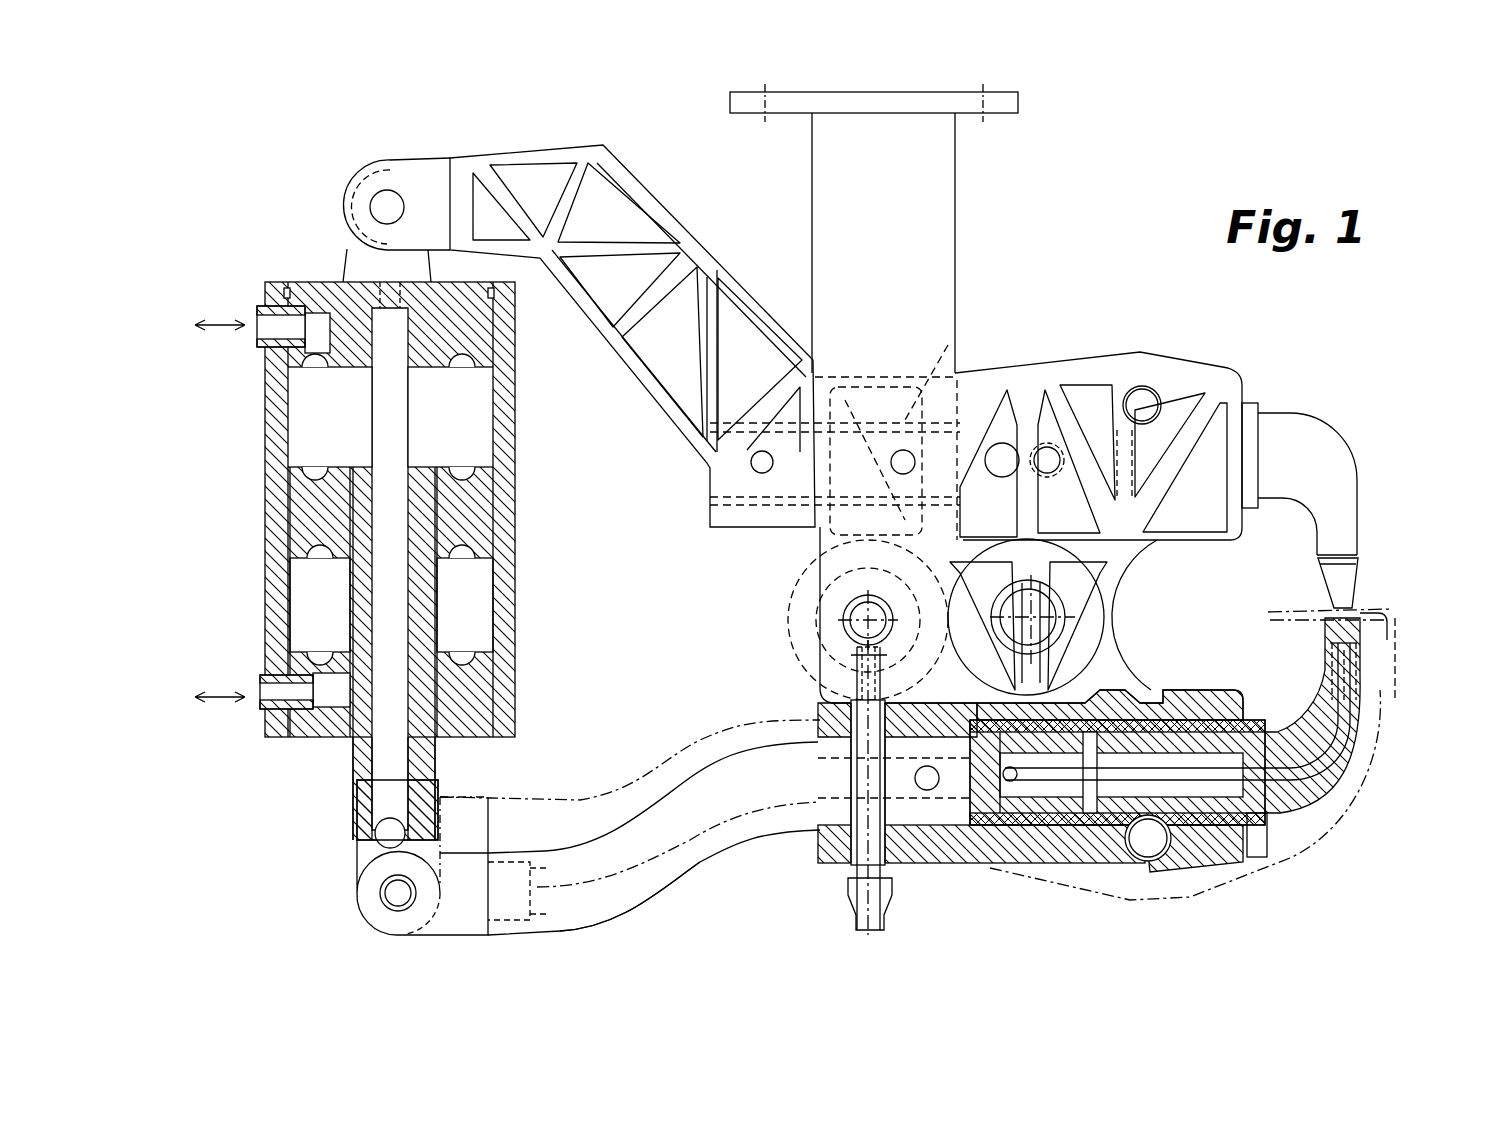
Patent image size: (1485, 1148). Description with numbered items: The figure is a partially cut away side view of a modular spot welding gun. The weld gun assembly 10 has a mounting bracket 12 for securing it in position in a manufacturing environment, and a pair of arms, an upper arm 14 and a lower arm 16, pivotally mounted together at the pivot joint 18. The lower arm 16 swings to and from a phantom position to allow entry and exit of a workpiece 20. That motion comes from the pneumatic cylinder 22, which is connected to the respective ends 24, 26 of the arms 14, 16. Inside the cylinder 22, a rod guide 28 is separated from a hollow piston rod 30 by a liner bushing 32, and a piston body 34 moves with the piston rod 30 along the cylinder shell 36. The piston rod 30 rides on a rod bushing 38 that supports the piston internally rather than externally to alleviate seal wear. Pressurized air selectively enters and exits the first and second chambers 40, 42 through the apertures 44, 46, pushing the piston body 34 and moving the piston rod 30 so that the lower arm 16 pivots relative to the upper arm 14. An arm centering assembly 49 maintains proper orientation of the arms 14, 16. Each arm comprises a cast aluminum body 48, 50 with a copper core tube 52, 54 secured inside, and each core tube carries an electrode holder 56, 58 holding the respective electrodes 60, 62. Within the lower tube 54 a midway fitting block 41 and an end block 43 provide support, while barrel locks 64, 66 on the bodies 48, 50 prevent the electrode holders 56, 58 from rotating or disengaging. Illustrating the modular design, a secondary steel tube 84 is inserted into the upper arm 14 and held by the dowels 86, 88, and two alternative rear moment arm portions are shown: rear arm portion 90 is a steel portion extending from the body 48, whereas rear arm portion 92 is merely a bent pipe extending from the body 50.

The weld gun assembly 10 is at (1168, 164).
The mounting bracket 12 is at (938, 215).
The upper arm 14 is at (730, 528).
The lower arm 16 is at (740, 740).
The pivot joint 18 is at (1060, 605).
The workpiece 20 is at (1375, 615).
The pneumatic cylinder 22 is at (388, 608).
The end of upper arm 24 is at (412, 158).
The end of lower arm 26 is at (470, 940).
The rod guide 28 is at (420, 432).
The hollow piston rod 30 is at (435, 750).
The liner bushing 32 is at (440, 770).
The piston body 34 is at (487, 497).
The cylinder shell 36 is at (518, 572).
The rod bushing 38 is at (355, 735).
The first chamber 40 is at (300, 432).
The midway fitting block 41 is at (1090, 840).
The second chamber 42 is at (300, 600).
The end block 43 is at (1010, 817).
The aperture 44 is at (262, 340).
The aperture 46 is at (265, 705).
The cast aluminum body 48 is at (1220, 368).
The arm centering assembly 49 is at (845, 895).
The cast aluminum body 50 is at (1060, 855).
The copper core tube 52 is at (1258, 403).
The copper core tube 54 is at (1270, 860).
The electrode holder 56 is at (1330, 430).
The electrode holder 58 is at (1340, 795).
The electrode 60 is at (1360, 580).
The electrode 62 is at (1365, 650).
The barrel lock 64 is at (1142, 387).
The barrel lock 66 is at (1140, 850).
The secondary steel tube 84 is at (940, 375).
The dowel 86 is at (751, 465).
The dowel 88 is at (915, 462).
The rear arm portion 90 is at (688, 235).
The rear arm portion 92 is at (625, 905).